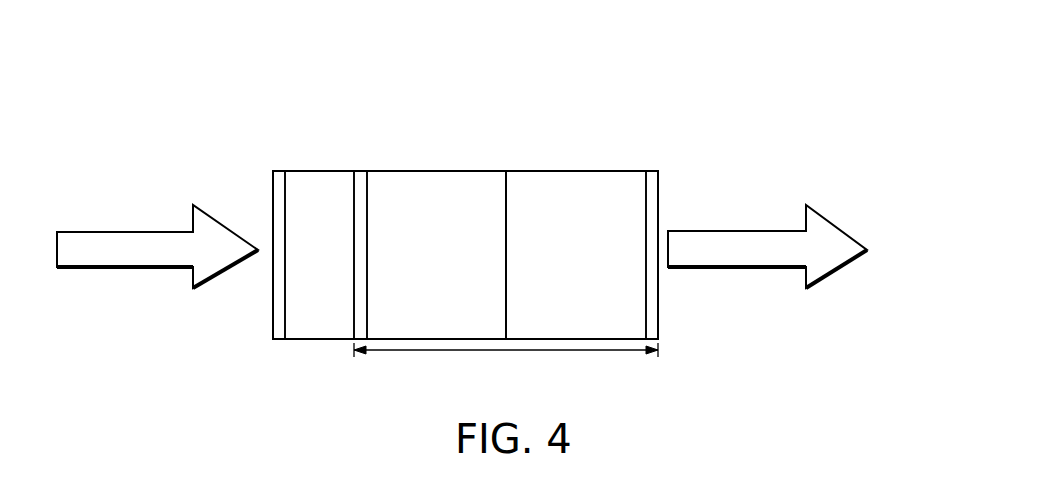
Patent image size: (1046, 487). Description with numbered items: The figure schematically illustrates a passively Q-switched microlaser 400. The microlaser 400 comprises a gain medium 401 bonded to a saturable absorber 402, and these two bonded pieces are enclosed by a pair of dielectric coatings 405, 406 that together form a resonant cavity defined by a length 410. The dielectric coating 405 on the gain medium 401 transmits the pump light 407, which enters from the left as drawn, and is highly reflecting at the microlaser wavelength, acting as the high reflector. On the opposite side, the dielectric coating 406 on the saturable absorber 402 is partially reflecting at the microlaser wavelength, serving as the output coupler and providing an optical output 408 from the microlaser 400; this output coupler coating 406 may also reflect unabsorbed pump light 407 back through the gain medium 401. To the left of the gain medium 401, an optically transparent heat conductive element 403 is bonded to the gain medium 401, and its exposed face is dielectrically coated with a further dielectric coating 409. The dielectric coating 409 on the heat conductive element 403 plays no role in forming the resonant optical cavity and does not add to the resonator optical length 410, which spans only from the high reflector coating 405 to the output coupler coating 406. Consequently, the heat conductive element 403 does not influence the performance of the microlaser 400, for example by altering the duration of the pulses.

The passively Q-switched microlaser 400 is at (511, 71).
The gain medium 401 is at (436, 168).
The saturable absorber 402 is at (568, 168).
The optically transparent heat conductive element 403 is at (319, 343).
The dielectric coating 405 is at (362, 168).
The dielectric coating 406 is at (651, 168).
The pump light 407 is at (127, 229).
The optical output 408 is at (742, 229).
The dielectric coating 409 is at (280, 168).
The length 410 is at (506, 363).